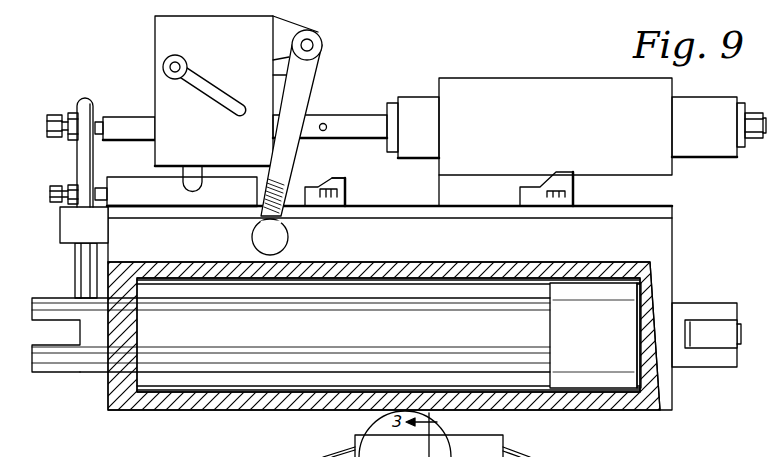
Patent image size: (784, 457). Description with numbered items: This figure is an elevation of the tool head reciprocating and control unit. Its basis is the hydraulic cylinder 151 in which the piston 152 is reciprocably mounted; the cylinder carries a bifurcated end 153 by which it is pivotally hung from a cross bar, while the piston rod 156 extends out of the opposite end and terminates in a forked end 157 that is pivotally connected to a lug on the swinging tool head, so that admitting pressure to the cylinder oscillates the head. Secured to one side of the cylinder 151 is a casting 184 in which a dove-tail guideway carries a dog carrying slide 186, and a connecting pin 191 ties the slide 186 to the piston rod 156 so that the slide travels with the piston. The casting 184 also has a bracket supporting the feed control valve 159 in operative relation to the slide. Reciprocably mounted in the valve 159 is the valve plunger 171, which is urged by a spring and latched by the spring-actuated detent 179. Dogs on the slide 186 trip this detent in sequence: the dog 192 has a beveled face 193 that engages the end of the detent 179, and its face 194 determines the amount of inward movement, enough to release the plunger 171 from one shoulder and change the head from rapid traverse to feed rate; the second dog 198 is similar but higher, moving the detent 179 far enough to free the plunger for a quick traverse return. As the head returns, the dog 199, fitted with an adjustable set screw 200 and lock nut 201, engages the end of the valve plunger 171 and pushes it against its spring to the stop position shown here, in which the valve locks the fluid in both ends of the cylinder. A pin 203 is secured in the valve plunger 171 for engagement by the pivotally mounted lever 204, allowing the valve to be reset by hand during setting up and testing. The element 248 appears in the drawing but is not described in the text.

The cylinder 151 is at (227, 407).
The piston 152 is at (612, 382).
The bifurcated end 153 is at (683, 307).
The piston rod 156 is at (88, 372).
The forked end 157 is at (55, 372).
The feed control valve 159 is at (520, 82).
The valve plunger 171 is at (132, 120).
The detent 179 is at (198, 174).
The casting 184 is at (665, 237).
The dog carrying slide 186 is at (70, 230).
The connecting pin 191 is at (82, 270).
The dog 192 is at (348, 193).
The beveled face 193 is at (323, 182).
The face 194 is at (340, 177).
The second dog 198 is at (575, 192).
The dog 199 is at (86, 102).
The adjustable set screw 200 is at (53, 113).
The lock nut 201 is at (70, 112).
The pin 203 is at (325, 114).
The lever 204 is at (320, 62).
The support 248 is at (355, 448).